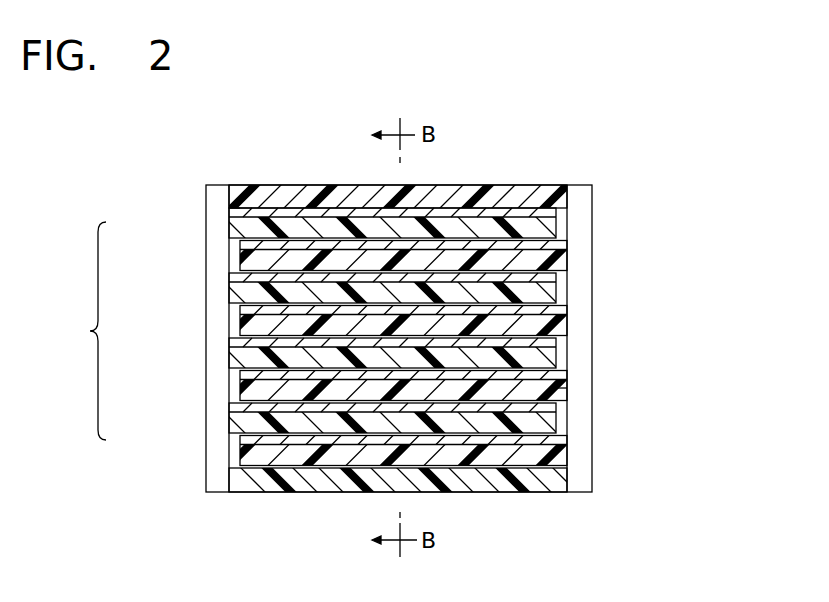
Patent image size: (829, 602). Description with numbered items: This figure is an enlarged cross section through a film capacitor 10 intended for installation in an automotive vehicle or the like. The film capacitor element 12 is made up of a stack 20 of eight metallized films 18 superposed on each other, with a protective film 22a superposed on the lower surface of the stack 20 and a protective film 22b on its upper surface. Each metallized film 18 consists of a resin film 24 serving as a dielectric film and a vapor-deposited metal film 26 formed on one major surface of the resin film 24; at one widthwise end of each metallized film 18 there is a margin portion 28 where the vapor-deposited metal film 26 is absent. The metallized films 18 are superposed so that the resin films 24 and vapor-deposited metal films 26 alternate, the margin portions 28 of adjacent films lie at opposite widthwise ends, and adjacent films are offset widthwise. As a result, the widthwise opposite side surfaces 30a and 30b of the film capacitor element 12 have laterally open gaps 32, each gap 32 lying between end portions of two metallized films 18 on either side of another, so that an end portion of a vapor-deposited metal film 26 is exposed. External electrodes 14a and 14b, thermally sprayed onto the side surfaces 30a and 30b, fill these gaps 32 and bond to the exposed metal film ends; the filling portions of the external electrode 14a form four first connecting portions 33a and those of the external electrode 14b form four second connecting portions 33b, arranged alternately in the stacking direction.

The film capacitor 10 is at (589, 132).
The film capacitor element 12 is at (487, 184).
The external electrode 14a is at (217, 440).
The external electrode 14b is at (582, 240).
The metallized film 18 is at (218, 229).
The stack 20 is at (85, 331).
The protective film 22a is at (308, 482).
The protective film 22b is at (387, 195).
The resin film 24 is at (325, 213).
The vapor-deposited metal film 26 is at (300, 222).
The margin portion 28 is at (262, 218).
The side surface 30a is at (228, 208).
The side surface 30b is at (572, 388).
The gap 32 is at (250, 213).
The first connecting portion 33a is at (242, 256).
The second connecting portion 33b is at (560, 258).